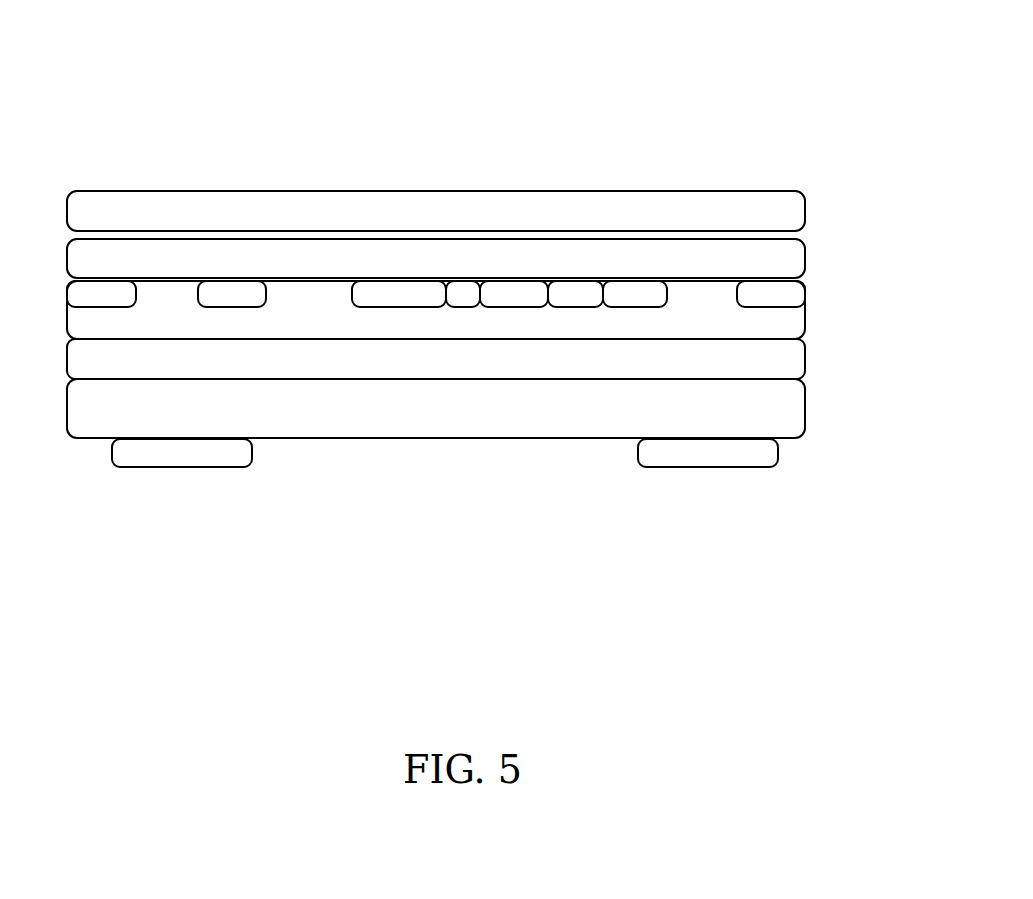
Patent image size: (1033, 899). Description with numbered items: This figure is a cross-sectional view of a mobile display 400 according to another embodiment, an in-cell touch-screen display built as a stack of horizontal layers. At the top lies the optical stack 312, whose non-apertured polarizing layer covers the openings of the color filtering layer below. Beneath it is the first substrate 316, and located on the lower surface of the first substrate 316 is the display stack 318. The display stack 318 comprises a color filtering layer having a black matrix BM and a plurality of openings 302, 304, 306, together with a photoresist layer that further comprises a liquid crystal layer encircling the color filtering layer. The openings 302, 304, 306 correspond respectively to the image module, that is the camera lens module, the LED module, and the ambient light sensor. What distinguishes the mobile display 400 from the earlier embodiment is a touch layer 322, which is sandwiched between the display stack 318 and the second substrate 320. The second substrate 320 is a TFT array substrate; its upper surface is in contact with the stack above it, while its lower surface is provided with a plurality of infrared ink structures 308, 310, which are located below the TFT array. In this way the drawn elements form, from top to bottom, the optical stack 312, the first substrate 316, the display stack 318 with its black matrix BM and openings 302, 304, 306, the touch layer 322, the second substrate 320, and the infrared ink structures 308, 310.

The mobile display 400 is at (715, 33).
The optical stack 312 is at (795, 217).
The first substrate 316 is at (795, 263).
The display stack 318 is at (832, 280).
The black matrix BM is at (103, 293).
The opening 302 is at (307, 293).
The opening 304 is at (462, 293).
The opening 306 is at (575, 293).
The touch layer 322 is at (795, 365).
The second substrate 320 is at (795, 420).
The infrared ink structure 308 is at (493, 500).
The infrared ink structure 310 is at (138, 455).